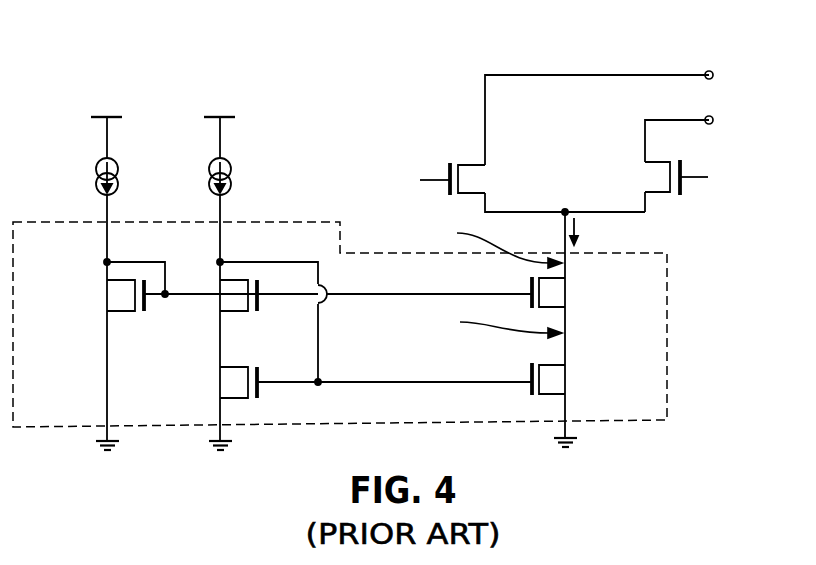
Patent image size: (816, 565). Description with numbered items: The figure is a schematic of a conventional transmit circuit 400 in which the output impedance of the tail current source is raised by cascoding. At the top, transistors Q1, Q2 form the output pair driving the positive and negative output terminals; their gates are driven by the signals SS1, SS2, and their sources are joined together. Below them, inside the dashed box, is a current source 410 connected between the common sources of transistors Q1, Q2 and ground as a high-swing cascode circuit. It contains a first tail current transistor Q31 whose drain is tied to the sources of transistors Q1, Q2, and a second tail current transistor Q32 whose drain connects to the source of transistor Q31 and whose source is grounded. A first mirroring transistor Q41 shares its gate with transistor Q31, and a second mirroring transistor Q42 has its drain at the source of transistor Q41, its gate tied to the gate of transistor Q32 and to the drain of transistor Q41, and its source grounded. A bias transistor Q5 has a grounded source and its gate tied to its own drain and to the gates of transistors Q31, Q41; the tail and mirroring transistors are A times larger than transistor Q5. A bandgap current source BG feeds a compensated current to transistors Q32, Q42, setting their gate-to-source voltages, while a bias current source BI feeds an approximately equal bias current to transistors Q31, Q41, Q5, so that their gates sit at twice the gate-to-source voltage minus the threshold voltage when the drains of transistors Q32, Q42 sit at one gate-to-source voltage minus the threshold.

The transmit circuit 400 is at (545, 72).
The current source 410 is at (667, 326).
The transistor Q1 is at (579, 143).
The transistor Q2 is at (663, 166).
The bias transistor Q5 is at (124, 350).
The first tail current transistor Q31 is at (570, 288).
The second tail current transistor Q32 is at (570, 400).
The first mirroring transistor Q41 is at (247, 320).
The second mirroring transistor Q42 is at (354, 404).
The input signal SS1 is at (412, 182).
The input signal SS2 is at (720, 180).
The bias current source BI is at (96, 172).
The bandgap current source BG is at (209, 172).